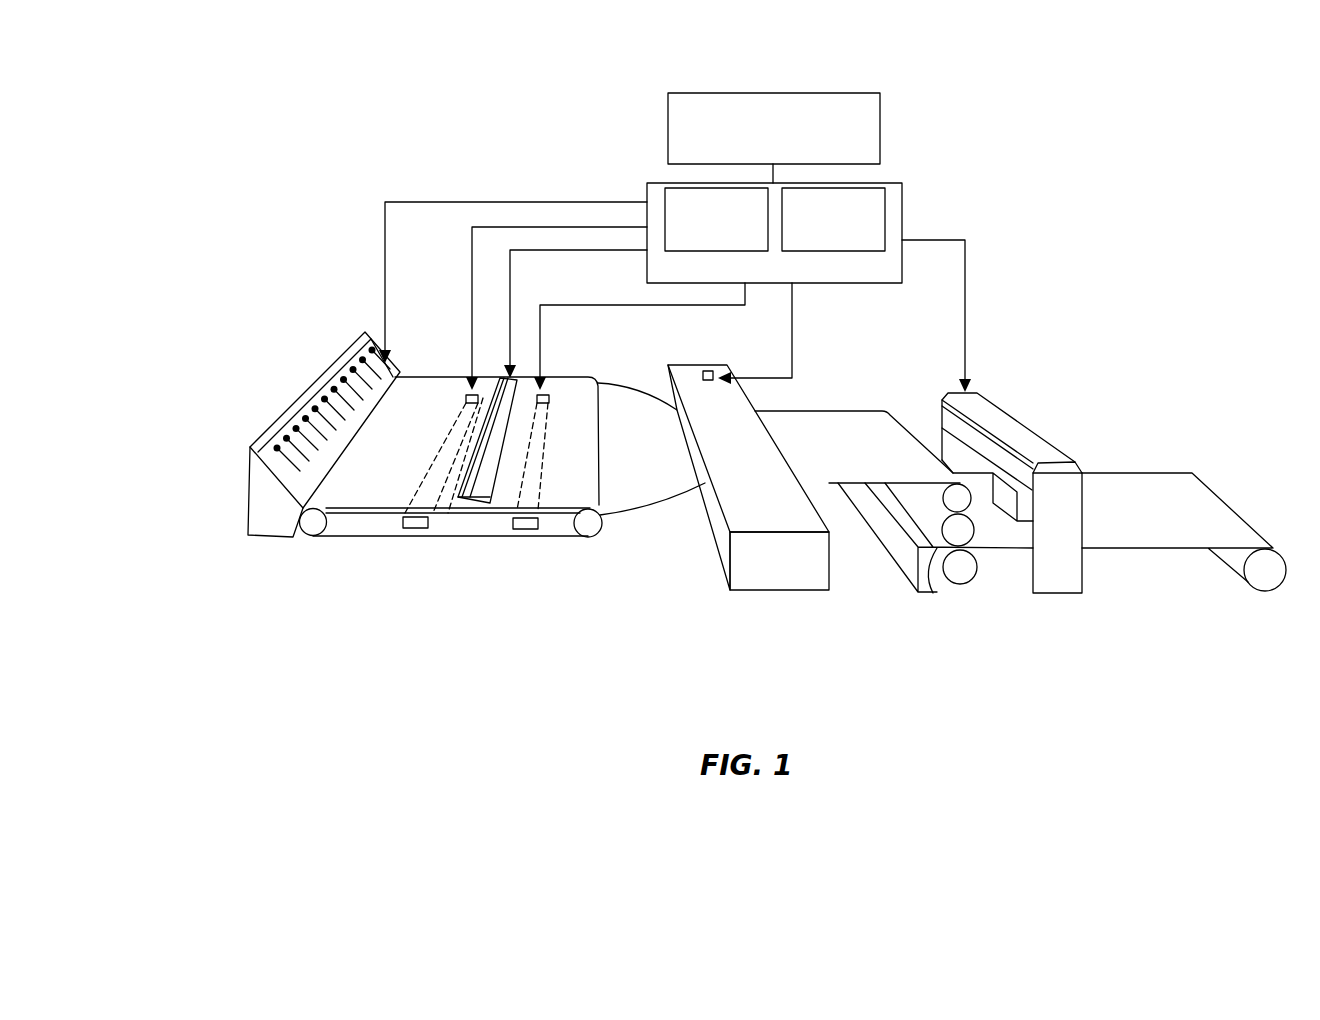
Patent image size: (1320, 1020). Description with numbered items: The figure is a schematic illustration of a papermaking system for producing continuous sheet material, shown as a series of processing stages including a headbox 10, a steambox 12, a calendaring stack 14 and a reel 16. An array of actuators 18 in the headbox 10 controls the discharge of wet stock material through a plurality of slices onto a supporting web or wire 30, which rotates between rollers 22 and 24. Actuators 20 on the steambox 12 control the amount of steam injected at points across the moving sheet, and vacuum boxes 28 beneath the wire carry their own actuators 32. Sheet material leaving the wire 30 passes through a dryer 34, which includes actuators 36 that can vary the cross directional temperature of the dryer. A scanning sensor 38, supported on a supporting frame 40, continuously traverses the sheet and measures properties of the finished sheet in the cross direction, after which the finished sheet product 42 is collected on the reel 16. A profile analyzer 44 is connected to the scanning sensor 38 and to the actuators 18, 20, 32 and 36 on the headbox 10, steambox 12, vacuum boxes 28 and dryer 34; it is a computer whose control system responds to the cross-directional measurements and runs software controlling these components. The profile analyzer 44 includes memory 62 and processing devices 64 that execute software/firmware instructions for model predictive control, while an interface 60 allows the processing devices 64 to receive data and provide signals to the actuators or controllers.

The headbox 10 is at (270, 503).
The steambox 12 is at (420, 514).
The calendaring stack 14 is at (952, 590).
The reel 16 is at (1267, 578).
The array of actuators 18 is at (328, 385).
The actuators 20 is at (505, 377).
The roller 22 is at (312, 528).
The roller 24 is at (588, 523).
The vacuum boxes 28 is at (420, 523).
The supporting web or wire 30 is at (458, 515).
The actuators 32 is at (548, 393).
The dryer 34 is at (755, 578).
The actuators 36 is at (705, 373).
The scanning sensor 38 is at (1003, 498).
The supporting frame 40 is at (1005, 544).
The finished sheet product 42 is at (1180, 483).
The profile analyzer 44 is at (880, 281).
The interface 60 is at (761, 152).
The memory 62 is at (705, 243).
The processing devices 64 is at (860, 242).